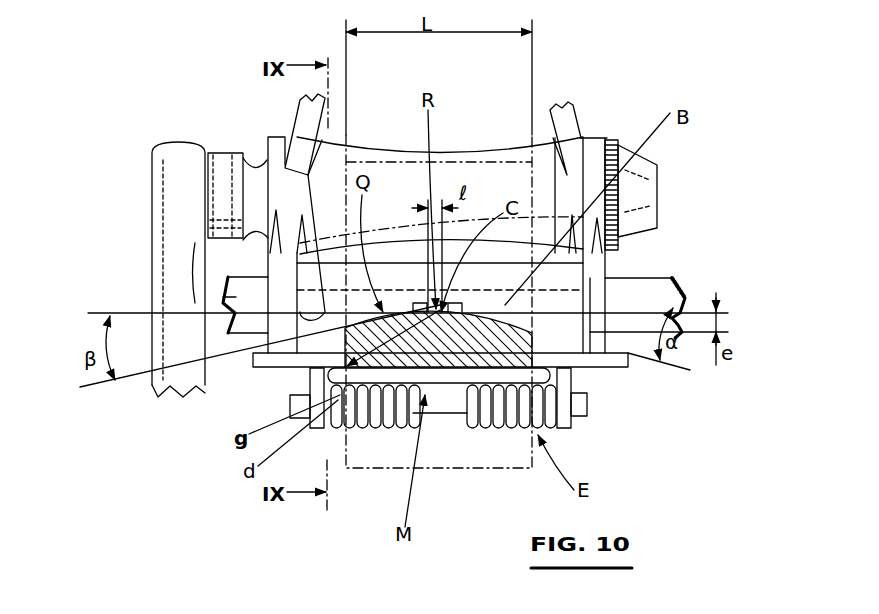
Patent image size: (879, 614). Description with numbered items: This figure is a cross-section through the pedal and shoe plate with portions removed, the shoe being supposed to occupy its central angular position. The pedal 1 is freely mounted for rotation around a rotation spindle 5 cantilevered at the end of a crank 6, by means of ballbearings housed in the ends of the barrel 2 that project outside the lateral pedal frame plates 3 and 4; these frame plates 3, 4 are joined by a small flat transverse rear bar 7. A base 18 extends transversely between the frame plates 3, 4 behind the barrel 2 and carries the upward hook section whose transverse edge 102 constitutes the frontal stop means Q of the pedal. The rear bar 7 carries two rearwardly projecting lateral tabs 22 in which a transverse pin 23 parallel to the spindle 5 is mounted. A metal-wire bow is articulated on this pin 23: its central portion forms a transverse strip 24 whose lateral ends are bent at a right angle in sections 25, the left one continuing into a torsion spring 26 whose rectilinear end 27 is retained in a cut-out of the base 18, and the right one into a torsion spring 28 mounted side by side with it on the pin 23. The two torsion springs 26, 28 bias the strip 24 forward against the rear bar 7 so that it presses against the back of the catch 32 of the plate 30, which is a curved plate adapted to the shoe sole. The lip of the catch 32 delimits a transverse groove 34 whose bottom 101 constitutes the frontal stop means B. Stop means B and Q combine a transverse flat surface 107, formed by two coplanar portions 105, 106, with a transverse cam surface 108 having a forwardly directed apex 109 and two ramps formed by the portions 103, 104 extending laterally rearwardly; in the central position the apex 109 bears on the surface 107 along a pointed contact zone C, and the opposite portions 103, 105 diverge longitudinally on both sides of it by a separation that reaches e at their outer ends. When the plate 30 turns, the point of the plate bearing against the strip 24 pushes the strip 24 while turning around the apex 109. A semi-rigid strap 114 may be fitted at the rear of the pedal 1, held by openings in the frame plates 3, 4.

The pedal 1 is at (592, 100).
The barrel 2 is at (543, 130).
The lateral pedal frame plate 3 is at (300, 132).
The lateral pedal frame plate 4 is at (672, 277).
The rotation spindle 5 is at (225, 175).
The crank 6 is at (167, 210).
The transverse rear bar 7 is at (636, 366).
The base 18 is at (307, 277).
The lateral tab 22 is at (300, 430).
The transverse pin 23 is at (582, 404).
The transverse strip 24 is at (462, 382).
The bent section 25 is at (345, 332).
The torsion spring 26 is at (381, 429).
The rectilinear end 27 is at (318, 440).
The torsion spring 28 is at (498, 420).
The plate 30 is at (352, 462).
The catch 32 is at (578, 370).
The transverse groove 34 is at (590, 260).
The bottom of groove 101 is at (522, 255).
The transverse edge of hook section 102 is at (600, 284).
The ramp portion 103 is at (590, 286).
The ramp portion 104 is at (340, 372).
The flat surface portion 105 is at (520, 325).
The flat surface portion 106 is at (315, 200).
The transverse flat surface 107 is at (297, 317).
The transverse cam surface 108 is at (400, 307).
The apex 109 is at (440, 372).
The semi-rigid strap 114 is at (223, 297).